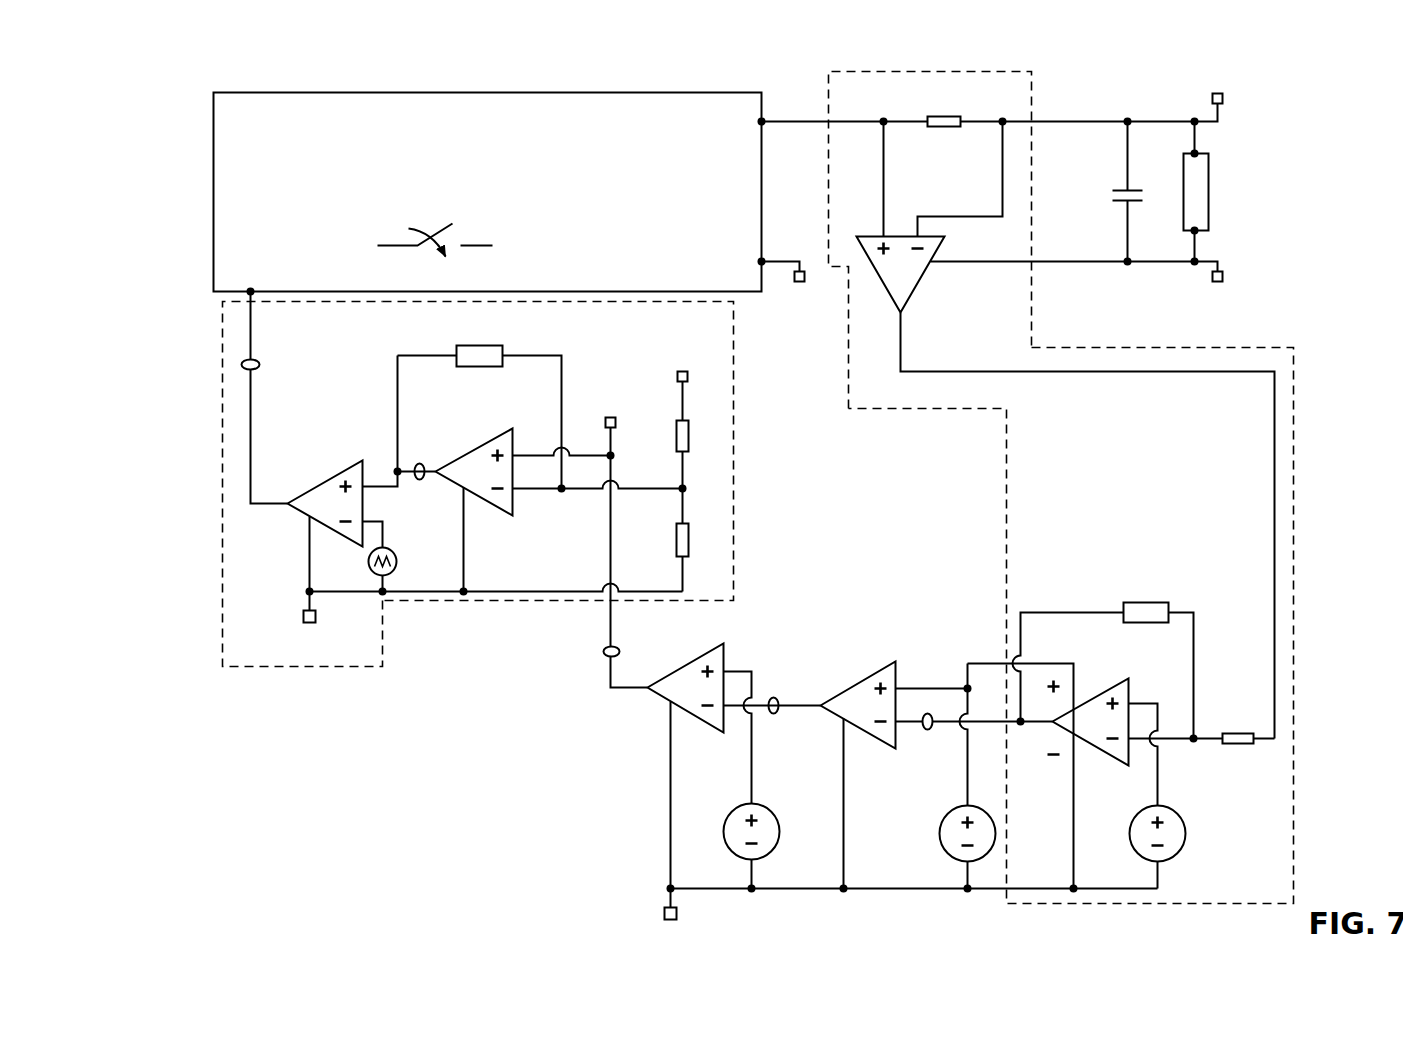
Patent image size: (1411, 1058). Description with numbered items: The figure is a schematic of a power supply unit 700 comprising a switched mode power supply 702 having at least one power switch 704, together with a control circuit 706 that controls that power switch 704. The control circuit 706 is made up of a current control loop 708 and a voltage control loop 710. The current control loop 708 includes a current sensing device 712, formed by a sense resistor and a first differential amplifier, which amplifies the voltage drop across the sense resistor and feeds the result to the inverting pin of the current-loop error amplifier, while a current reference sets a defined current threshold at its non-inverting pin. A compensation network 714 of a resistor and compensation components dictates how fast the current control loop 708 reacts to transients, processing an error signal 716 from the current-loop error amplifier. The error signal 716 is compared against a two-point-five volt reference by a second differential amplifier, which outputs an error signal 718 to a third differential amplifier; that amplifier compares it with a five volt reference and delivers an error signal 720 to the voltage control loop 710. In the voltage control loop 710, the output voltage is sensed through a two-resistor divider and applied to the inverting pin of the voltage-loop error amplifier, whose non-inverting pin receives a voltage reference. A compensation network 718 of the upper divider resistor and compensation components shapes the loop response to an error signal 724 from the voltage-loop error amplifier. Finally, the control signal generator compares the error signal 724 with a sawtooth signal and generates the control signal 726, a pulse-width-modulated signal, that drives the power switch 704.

The power supply unit 700 is at (203, 50).
The switched mode power supply 702 is at (281, 93).
The power switch 704 is at (478, 221).
The control circuit 706 is at (193, 303).
The current control loop 708 is at (1006, 478).
The voltage control loop 710 is at (733, 460).
The current sensing device 712 is at (846, 175).
The compensation network 714 is at (1214, 611).
The error signal 716 is at (927, 731).
The compensation network 718 is at (576, 346).
The error signal 720 is at (603, 653).
The error signal 724 is at (418, 465).
The control signal 726 is at (259, 365).